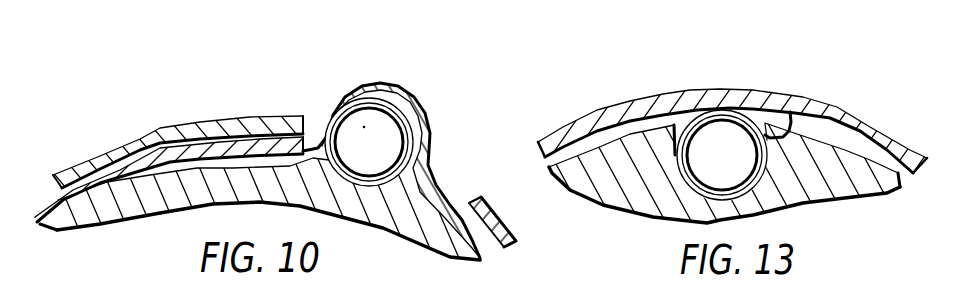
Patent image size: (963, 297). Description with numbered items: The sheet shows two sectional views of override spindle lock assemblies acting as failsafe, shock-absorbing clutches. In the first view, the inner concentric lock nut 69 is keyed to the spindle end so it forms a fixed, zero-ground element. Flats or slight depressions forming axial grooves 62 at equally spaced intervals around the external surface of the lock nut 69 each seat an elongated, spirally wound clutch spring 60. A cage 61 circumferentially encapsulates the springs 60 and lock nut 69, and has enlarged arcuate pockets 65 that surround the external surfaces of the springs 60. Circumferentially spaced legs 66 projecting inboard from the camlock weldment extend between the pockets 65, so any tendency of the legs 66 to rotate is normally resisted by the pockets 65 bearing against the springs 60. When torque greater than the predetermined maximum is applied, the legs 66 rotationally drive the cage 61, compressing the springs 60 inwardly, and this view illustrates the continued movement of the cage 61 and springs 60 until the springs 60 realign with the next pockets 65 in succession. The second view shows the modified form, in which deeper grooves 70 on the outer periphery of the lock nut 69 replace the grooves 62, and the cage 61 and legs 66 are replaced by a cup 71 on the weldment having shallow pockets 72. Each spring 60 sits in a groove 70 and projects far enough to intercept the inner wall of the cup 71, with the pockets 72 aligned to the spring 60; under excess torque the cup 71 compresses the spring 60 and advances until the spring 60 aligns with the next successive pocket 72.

In FIG. 10, the clutch spring 60 is at (388, 126).
In FIG. 13, the clutch spring 60 is at (694, 110).
In FIG. 10, the cage 61 is at (121, 170).
In FIG. 10, the axial groove 62 is at (247, 170).
In FIG. 10, the arcuate pocket 65 is at (347, 92).
In FIG. 10, the leg 66 is at (215, 124).
In FIG. 10, the lock nut 69 is at (421, 236).
In FIG. 13, the groove 70 is at (790, 112).
In FIG. 13, the cup 71 is at (747, 100).
In FIG. 13, the shallow pocket 72 is at (860, 102).